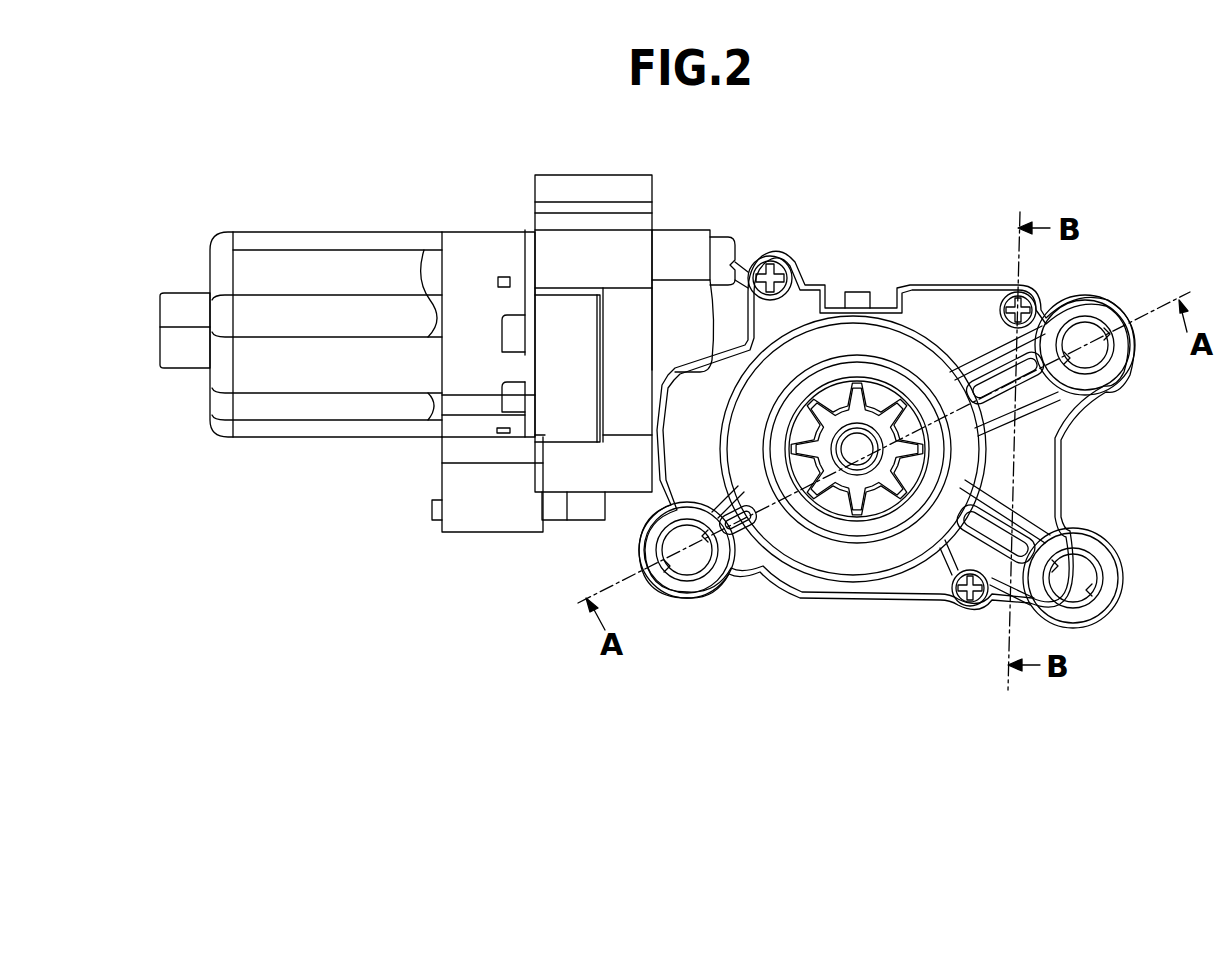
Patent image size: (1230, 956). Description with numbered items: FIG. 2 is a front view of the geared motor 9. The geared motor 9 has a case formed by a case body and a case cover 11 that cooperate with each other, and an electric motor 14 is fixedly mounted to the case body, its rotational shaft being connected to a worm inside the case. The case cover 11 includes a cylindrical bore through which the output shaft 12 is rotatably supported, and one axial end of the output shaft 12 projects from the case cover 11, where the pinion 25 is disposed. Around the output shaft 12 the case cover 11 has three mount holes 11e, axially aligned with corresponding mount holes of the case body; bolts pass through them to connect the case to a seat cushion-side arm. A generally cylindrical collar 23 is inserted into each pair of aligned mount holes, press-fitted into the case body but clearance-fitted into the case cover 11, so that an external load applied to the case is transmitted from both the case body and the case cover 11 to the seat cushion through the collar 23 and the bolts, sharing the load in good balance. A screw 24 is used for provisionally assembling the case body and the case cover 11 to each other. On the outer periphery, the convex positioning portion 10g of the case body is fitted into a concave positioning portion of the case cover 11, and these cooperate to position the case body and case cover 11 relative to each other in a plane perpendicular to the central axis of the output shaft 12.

The geared motor 9 is at (955, 165).
The convex positioning portion 10g is at (883, 286).
The case cover 11 is at (1025, 458).
The mount holes 11e is at (1082, 340).
The output shaft 12 is at (838, 470).
The electric motor 14 is at (332, 400).
The collar 23 is at (1105, 352).
The screw 24 is at (773, 255).
The pinion 25 is at (868, 500).